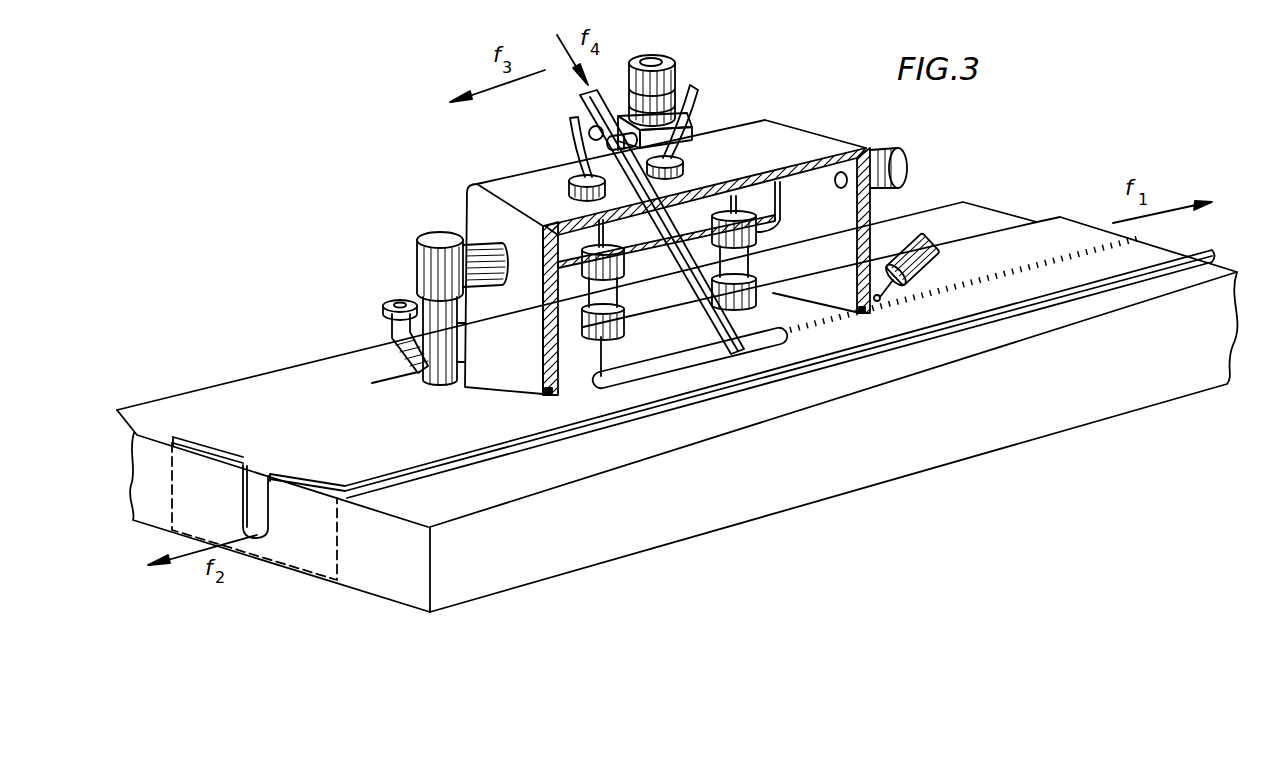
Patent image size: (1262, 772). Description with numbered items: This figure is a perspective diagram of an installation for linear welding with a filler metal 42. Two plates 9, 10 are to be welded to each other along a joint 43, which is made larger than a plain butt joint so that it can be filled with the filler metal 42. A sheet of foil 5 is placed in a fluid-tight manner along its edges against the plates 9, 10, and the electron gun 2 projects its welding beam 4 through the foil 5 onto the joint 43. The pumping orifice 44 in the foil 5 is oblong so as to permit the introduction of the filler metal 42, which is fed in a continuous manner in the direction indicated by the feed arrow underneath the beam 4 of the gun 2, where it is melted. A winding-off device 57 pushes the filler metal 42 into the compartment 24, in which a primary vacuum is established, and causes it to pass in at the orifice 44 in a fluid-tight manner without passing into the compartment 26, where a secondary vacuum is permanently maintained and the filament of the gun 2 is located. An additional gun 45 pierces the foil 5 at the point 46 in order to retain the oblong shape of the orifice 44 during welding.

The electron gun 2 is at (806, 190).
The welding beam 4 is at (827, 262).
The sheet of foil 5 is at (373, 407).
The plate 9 is at (167, 450).
The plate 10 is at (414, 592).
The compartment 24 is at (820, 203).
The compartment 26 is at (750, 197).
The filler metal 42 is at (690, 205).
The joint 43 is at (268, 485).
The pumping orifice 44 is at (598, 200).
The additional gun 45 is at (597, 288).
The piercing point 46 is at (608, 384).
The winding-off device 57 is at (663, 94).